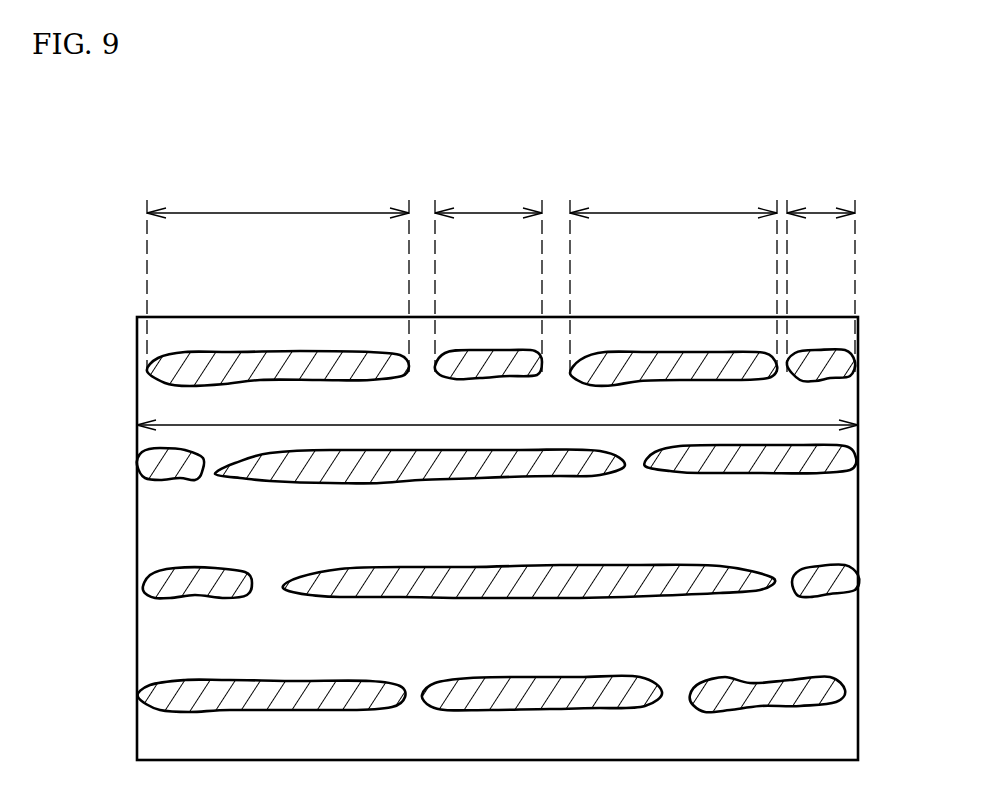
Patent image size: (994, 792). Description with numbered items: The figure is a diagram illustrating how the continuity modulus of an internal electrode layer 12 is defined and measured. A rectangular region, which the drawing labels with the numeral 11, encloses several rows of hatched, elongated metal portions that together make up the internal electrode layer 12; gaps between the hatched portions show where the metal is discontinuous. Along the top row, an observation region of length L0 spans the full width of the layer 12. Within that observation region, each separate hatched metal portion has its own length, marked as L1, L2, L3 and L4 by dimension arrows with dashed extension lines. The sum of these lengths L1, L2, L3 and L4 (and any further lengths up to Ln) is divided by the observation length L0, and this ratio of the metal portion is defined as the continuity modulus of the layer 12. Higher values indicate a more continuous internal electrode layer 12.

The base material / substrate 11 is at (838, 520).
The internal electrode layer 12 is at (840, 364).
The observation region length L0 is at (497, 413).
The metal portion length L1 is at (278, 198).
The metal portion length L2 is at (488, 198).
The metal portion length L3 is at (673, 198).
The metal portion length L4 is at (821, 198).